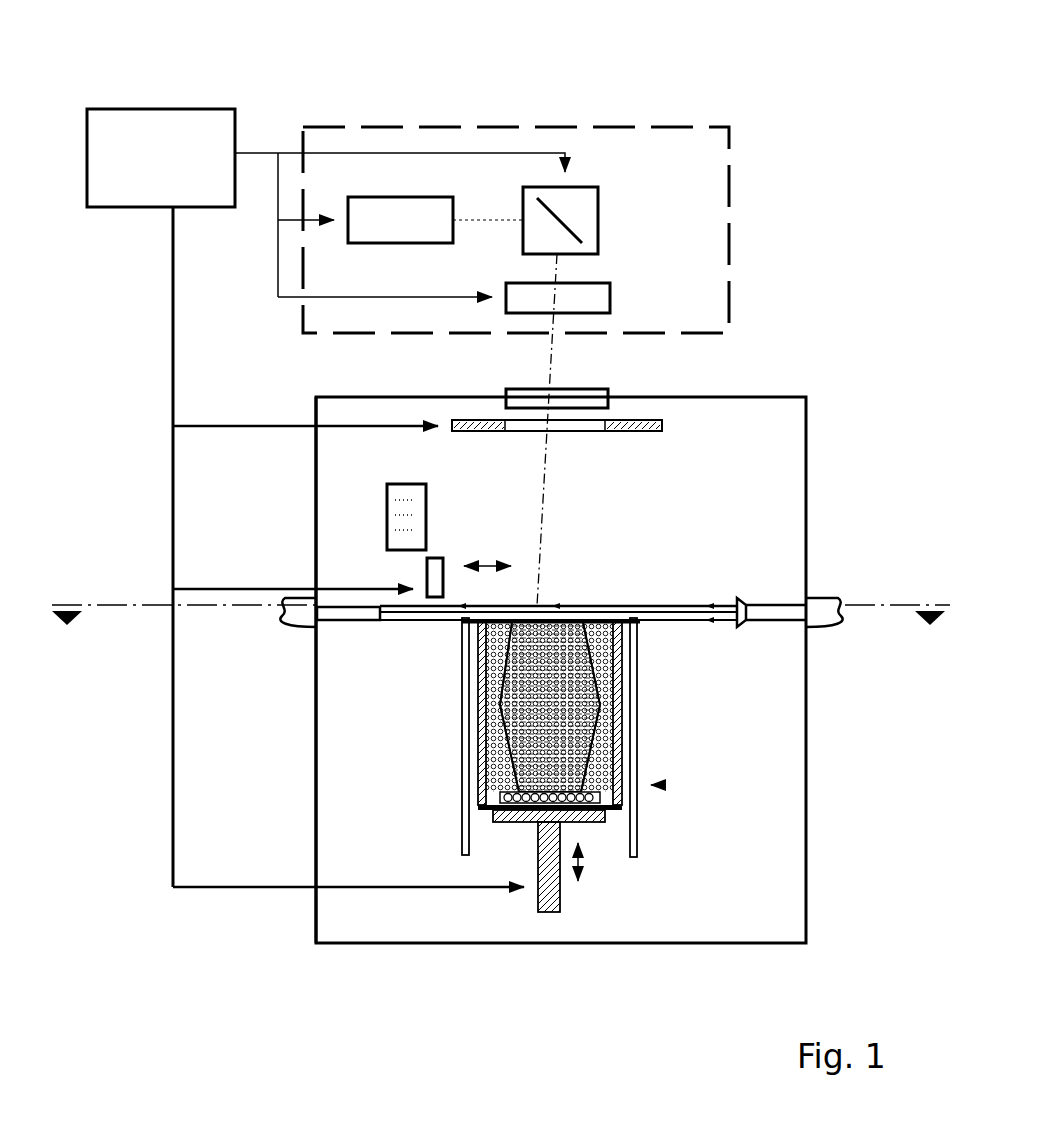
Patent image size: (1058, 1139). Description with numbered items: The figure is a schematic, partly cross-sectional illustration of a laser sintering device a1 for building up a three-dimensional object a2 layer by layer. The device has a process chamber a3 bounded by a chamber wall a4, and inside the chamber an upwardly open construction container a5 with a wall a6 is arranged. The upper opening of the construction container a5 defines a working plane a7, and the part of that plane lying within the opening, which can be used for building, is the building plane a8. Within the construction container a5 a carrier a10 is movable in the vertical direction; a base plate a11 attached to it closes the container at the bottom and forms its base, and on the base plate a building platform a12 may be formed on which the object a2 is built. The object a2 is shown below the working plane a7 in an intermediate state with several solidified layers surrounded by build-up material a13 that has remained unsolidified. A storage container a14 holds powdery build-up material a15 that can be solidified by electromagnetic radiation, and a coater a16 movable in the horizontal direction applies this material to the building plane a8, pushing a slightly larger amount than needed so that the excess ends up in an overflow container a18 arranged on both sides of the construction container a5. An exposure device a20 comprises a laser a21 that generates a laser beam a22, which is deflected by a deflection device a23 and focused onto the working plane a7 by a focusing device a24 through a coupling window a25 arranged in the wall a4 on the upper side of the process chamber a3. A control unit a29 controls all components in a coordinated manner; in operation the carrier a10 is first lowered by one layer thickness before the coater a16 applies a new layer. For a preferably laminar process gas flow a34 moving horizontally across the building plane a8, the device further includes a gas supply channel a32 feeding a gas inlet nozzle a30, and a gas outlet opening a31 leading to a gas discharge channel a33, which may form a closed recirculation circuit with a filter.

The laser sintering device a1 is at (764, 140).
The object a2 is at (612, 655).
The process chamber a3 is at (757, 425).
The chamber wall a4 is at (316, 808).
The construction container a5 is at (660, 788).
The wall a6 is at (640, 735).
The working plane a7 is at (705, 612).
The building plane a8 is at (660, 606).
The carrier a10 is at (522, 822).
The base plate a11 is at (493, 826).
The building platform a12 is at (500, 795).
The build-up material a13 is at (478, 652).
The storage container a14 is at (405, 495).
The powdery build-up material a15 is at (426, 520).
The coater a16 is at (425, 573).
The overflow container a18 is at (462, 735).
The exposure device a20 is at (730, 270).
The laser a21 is at (406, 243).
The laser beam a22 is at (478, 214).
The deflection device a23 is at (598, 205).
The focusing device a24 is at (610, 298).
The coupling window a25 is at (580, 398).
The control unit a29 is at (126, 190).
The gas inlet nozzle a30 is at (335, 628).
The gas outlet opening a31 is at (778, 610).
The gas supply channel a32 is at (300, 628).
The gas discharge channel a33 is at (822, 605).
The process gas flow a34 is at (740, 598).